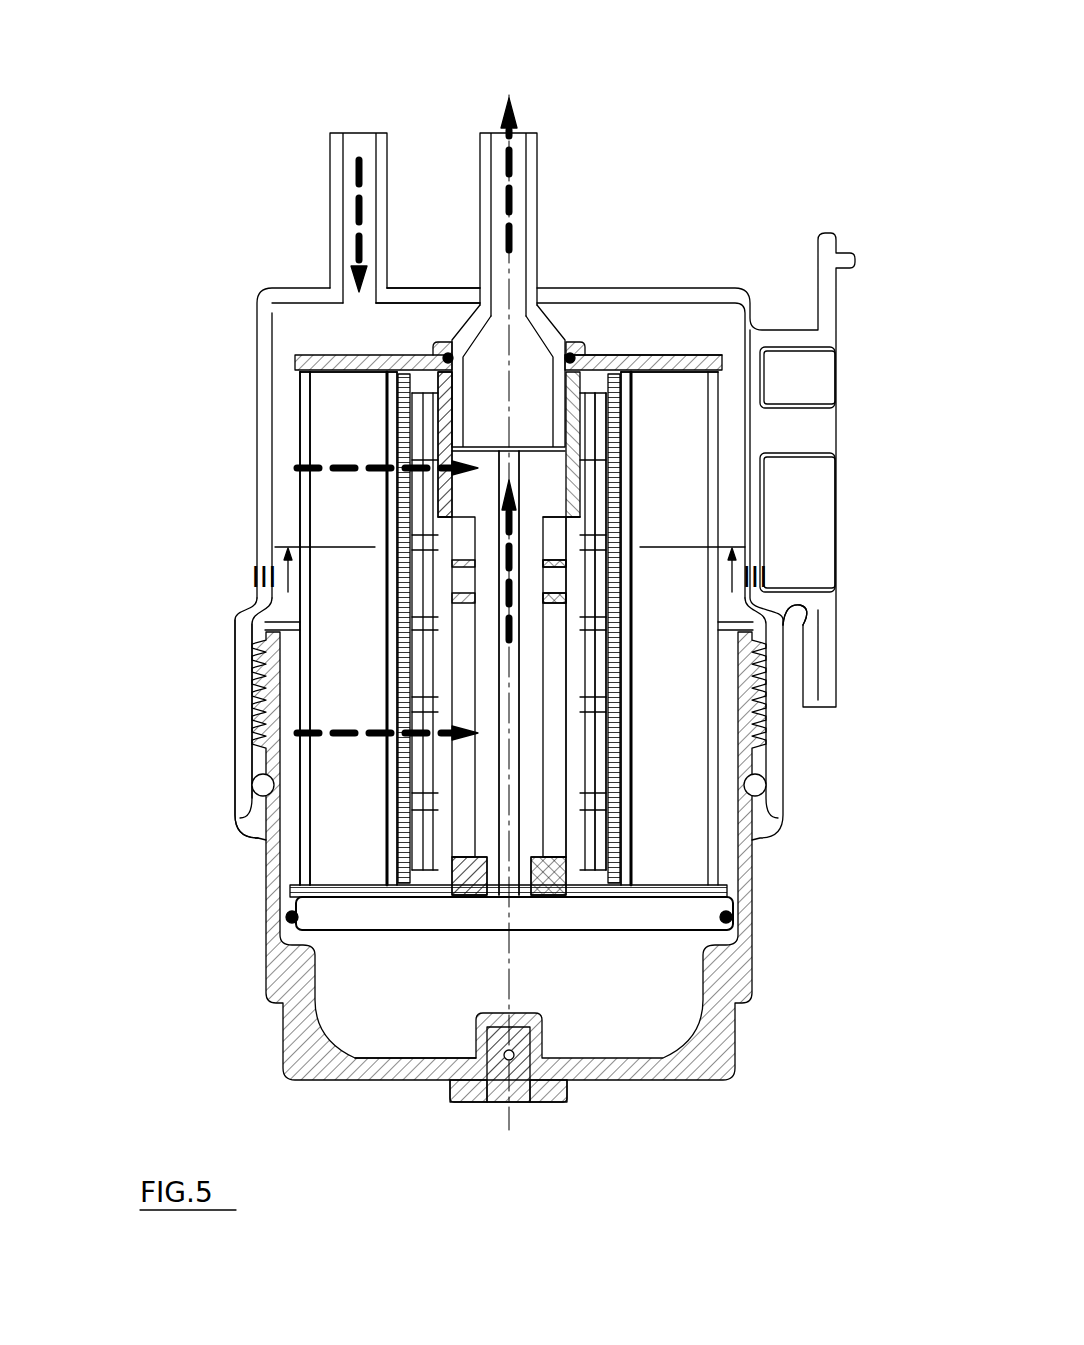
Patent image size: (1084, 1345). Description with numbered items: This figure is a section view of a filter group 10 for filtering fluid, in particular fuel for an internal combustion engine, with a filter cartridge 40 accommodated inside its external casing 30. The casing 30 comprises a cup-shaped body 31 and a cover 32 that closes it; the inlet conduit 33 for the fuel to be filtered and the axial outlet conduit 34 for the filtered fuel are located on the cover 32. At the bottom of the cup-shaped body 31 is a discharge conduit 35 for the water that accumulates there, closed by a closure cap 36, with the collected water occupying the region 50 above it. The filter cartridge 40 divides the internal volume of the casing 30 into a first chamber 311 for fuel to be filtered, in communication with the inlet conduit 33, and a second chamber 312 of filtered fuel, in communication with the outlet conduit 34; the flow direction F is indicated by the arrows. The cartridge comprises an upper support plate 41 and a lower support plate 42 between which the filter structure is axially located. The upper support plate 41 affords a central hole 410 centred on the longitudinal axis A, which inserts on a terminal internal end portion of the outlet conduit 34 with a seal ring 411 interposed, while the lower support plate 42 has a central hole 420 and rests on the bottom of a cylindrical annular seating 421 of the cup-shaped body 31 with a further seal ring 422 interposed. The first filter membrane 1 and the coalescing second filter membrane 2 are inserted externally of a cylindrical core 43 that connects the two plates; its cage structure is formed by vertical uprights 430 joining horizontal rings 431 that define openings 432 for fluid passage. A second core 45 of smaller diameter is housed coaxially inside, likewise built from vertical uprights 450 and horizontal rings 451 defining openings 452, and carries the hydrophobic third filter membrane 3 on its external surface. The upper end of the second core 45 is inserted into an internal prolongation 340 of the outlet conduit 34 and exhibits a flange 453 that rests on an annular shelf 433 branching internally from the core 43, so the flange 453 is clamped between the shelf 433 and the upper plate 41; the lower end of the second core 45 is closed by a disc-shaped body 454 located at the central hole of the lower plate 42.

The filter group 10 is at (182, 184).
The inlet conduit 33 is at (337, 153).
The outlet conduit 34 is at (540, 140).
The external casing 30 is at (730, 270).
The cover 32 is at (420, 287).
The central hole 410 is at (540, 352).
The upper support plate 41 is at (693, 354).
The flange 453 is at (365, 344).
The filter cartridge 40 is at (280, 370).
The seal ring 411 is at (433, 355).
The internal prolongation 340 is at (568, 352).
The horizontal rings 431 is at (600, 467).
The annular shelf 433 is at (390, 442).
The first chamber 311 is at (282, 480).
The core 43 is at (625, 543).
The second filter membrane 2 is at (383, 532).
The first filter membrane 1 is at (318, 637).
The vertical uprights 430 is at (640, 620).
The openings 432 is at (302, 638).
The vertical uprights 450 is at (600, 692).
The second chamber 312 is at (300, 722).
The flow direction F is at (292, 733).
The second core 45 is at (585, 747).
The third filter membrane 3 is at (252, 808).
The horizontal rings 451 is at (600, 797).
The openings 452 is at (633, 851).
The lower support plate 42 is at (300, 935).
The cylindrical annular seating 421 is at (735, 915).
The cup-shaped body 31 is at (277, 968).
The seal ring 422 is at (733, 921).
The collection chamber 50 is at (400, 1005).
The disc-shaped body 454 is at (493, 875).
The central hole 420 is at (578, 900).
The discharge conduit 35 is at (468, 1092).
The longitudinal axis A is at (509, 1128).
The closure cap 36 is at (548, 1100).